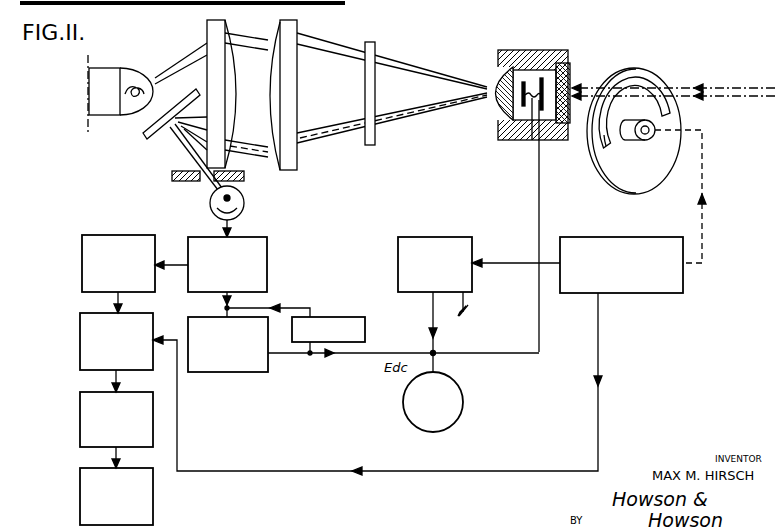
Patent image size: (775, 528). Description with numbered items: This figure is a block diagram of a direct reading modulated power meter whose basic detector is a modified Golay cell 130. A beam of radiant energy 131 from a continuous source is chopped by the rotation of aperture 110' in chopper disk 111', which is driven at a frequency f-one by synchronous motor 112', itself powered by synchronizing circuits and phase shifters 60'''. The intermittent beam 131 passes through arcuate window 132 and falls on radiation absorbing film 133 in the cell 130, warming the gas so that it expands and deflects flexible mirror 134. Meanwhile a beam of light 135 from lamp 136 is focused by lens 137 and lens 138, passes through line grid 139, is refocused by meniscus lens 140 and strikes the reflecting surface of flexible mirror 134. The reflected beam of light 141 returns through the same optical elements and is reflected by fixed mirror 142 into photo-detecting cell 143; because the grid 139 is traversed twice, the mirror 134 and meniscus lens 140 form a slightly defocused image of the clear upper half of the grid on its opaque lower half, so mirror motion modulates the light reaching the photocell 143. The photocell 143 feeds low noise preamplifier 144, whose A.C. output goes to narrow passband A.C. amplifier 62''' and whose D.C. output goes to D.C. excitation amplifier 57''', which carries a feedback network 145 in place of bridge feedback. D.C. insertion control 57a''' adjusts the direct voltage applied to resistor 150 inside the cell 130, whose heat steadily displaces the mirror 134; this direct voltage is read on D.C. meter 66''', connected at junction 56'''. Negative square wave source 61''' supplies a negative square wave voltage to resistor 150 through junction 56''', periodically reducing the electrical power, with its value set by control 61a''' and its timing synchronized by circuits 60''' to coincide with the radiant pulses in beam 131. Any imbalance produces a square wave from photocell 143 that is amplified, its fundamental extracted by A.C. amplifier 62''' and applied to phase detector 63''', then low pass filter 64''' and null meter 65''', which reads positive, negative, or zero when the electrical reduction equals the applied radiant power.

The modified Golay cell 130 is at (543, 50).
The beam of radiant energy 131 is at (696, 84).
The arcuate window 132 is at (572, 72).
The radiation absorbing film 133 is at (549, 128).
The flexible mirror 134 is at (523, 82).
The beam of light 135 is at (455, 76).
The lamp 136 is at (118, 68).
The lens 137 is at (227, 22).
The lens 138 is at (298, 22).
The line grid 139 is at (376, 45).
The meniscus lens 140 is at (487, 108).
The reflected beam of light 141 is at (403, 116).
The fixed mirror 142 is at (163, 135).
The photo-detecting cell 143 is at (245, 203).
The low noise preamplifier 144 is at (268, 252).
The feedback network 145 is at (330, 317).
The resistor 150 is at (531, 136).
The aperture 110' is at (635, 112).
The chopper disk 111' is at (603, 182).
The synchronous motor 112' is at (637, 144).
The synchronizing circuits and phase shifters 60''' is at (621, 253).
The negative square wave source 61''' is at (440, 252).
The control 61a''' is at (492, 304).
The A.C. amplifier 62''' is at (94, 263).
The phase detector 63''' is at (93, 341).
The low pass filter 64''' is at (93, 419).
The null meter 65''' is at (93, 496).
The junction 56''' is at (475, 324).
The D.C. excitation amplifier 57''' is at (255, 349).
The D.C. insertion control 57a''' is at (325, 372).
The D.C. meter 66''' is at (460, 392).